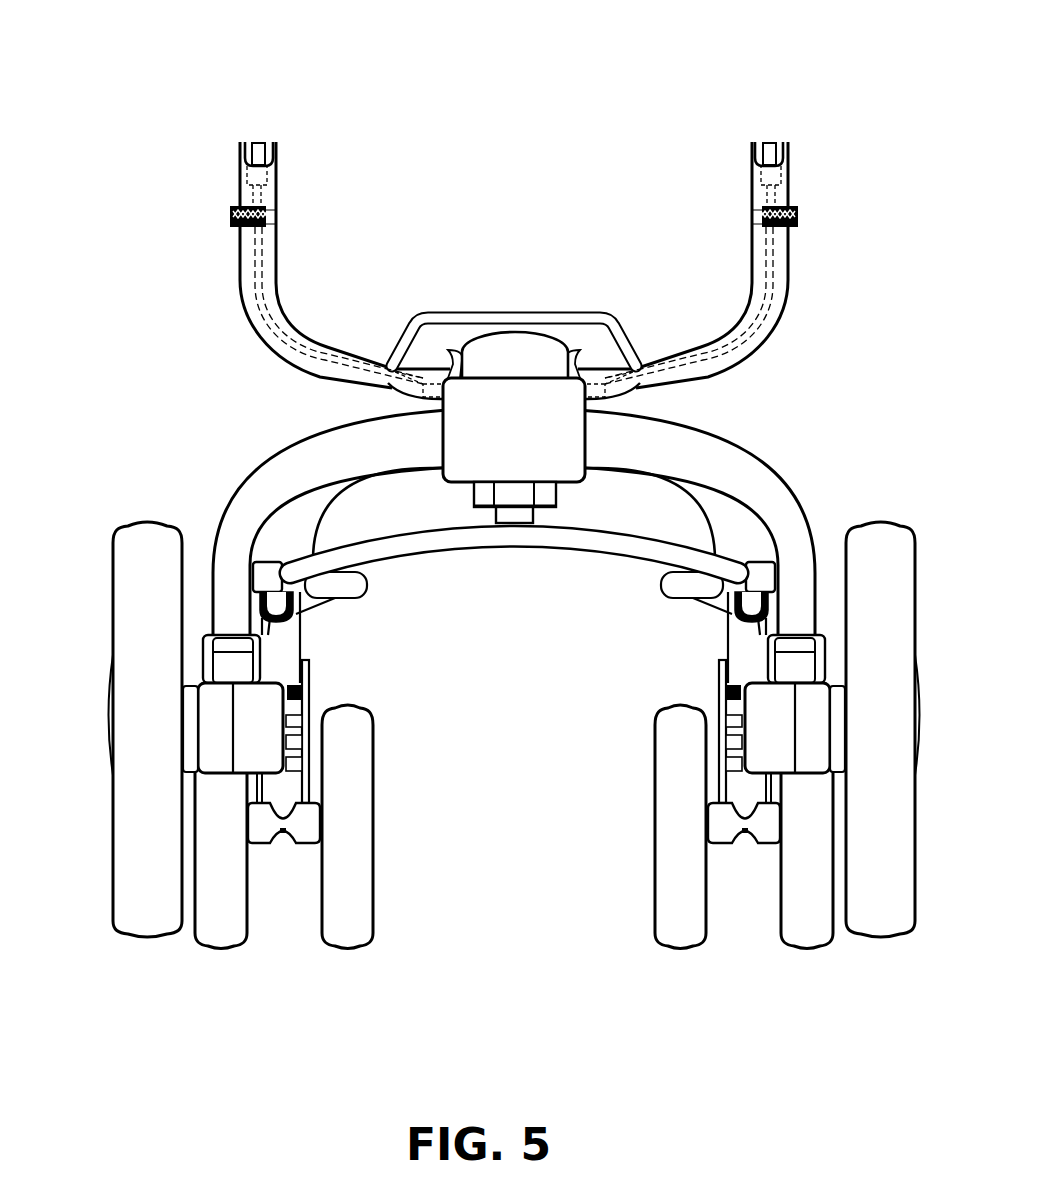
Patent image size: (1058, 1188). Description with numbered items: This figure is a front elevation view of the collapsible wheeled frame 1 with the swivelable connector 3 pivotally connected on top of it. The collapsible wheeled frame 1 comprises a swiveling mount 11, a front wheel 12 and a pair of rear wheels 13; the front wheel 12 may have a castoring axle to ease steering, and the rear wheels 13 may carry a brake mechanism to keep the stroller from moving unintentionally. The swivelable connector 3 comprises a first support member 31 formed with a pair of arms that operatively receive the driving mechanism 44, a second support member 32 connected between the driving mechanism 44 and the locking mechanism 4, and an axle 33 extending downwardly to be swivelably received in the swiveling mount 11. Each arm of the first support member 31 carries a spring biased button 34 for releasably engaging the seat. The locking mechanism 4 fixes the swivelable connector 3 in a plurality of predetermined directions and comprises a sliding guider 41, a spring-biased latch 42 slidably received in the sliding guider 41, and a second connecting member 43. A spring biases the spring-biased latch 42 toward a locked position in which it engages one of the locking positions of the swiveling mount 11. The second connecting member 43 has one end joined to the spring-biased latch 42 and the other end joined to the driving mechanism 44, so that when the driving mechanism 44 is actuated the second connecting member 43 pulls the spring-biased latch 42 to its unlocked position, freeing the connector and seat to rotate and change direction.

The collapsible wheeled frame 1 is at (167, 457).
The swivelable connector 3 is at (482, 223).
The locking mechanism 4 is at (538, 271).
The swiveling mount 11 is at (532, 450).
The front wheel 12 is at (676, 790).
The rear wheels 13 is at (890, 545).
The first support member 31 is at (753, 260).
The second support member 32 is at (509, 316).
The axle 33 is at (516, 520).
The spring biased button 34 is at (796, 207).
The sliding guider 41 is at (428, 392).
The spring-biased latch 42 is at (424, 382).
The second connecting member 43 is at (760, 300).
The driving mechanism 44 is at (270, 100).